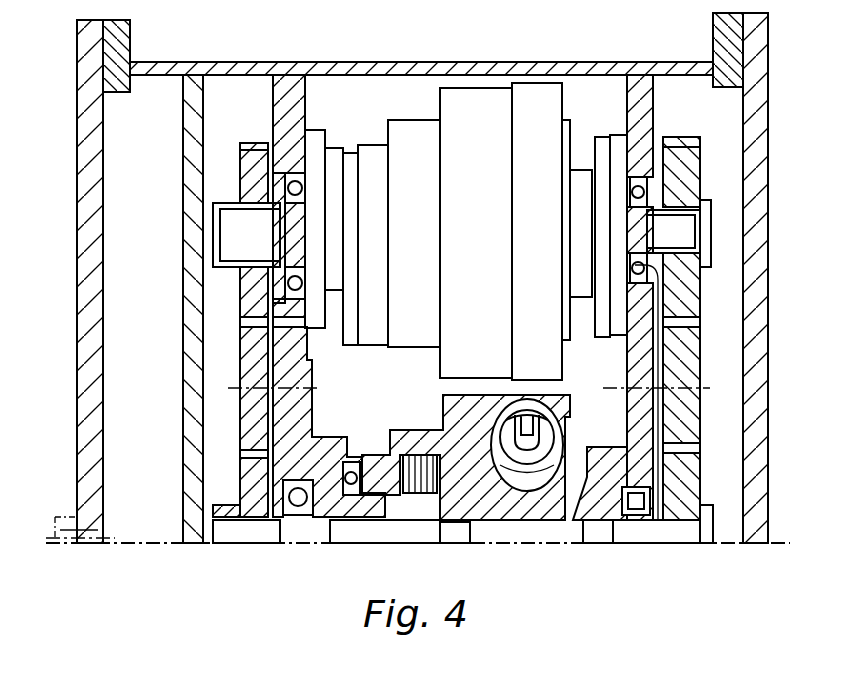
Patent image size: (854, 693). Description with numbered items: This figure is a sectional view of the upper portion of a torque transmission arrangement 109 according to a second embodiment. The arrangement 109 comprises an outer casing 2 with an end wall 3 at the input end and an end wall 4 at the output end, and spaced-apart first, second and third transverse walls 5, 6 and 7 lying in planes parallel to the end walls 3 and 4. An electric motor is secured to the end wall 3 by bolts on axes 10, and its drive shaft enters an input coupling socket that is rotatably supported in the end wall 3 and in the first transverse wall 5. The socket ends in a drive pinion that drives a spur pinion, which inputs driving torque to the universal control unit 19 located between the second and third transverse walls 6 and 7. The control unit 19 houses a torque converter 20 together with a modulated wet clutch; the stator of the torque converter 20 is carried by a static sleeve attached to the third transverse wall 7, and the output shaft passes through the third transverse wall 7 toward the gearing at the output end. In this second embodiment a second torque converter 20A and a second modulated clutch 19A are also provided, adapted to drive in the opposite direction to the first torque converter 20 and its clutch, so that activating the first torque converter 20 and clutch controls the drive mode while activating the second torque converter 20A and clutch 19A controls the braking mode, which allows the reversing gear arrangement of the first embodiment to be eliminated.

The outer casing 2 is at (486, 62).
The end wall 3 is at (95, 172).
The end wall 4 is at (760, 190).
The first transverse wall 5 is at (190, 290).
The second transverse wall 6 is at (273, 88).
The third transverse wall 7 is at (642, 103).
The axes 10 is at (100, 522).
The universal control unit 19 is at (437, 392).
The modulated clutch 19A is at (410, 140).
The torque converter 20 is at (566, 426).
The second torque converter 20A is at (548, 104).
The torque transmission arrangement 109 is at (272, 42).